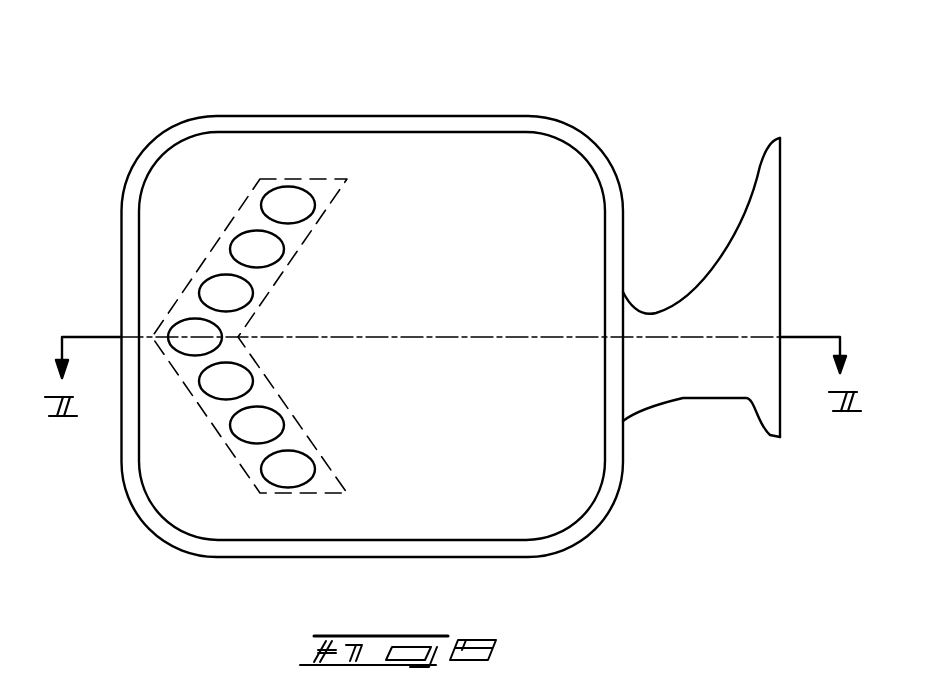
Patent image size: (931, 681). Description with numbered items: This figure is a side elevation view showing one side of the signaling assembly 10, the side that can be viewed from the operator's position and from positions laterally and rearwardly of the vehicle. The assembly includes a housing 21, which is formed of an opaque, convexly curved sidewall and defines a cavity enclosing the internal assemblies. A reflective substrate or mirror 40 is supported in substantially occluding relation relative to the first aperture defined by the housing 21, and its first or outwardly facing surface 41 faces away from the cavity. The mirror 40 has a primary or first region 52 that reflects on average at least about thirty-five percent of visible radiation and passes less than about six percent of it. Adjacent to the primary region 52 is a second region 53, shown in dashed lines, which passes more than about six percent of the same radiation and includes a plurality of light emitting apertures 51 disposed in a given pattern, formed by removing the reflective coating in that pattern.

The signaling assembly 10 is at (520, 66).
The housing 21 is at (592, 145).
The reflective substrate or mirror 40 is at (542, 493).
The first or outwardly facing surface 41 is at (508, 293).
The primary or first region 52 is at (508, 400).
The light emitting apertures 51 is at (235, 292).
The second region 53 is at (180, 297).